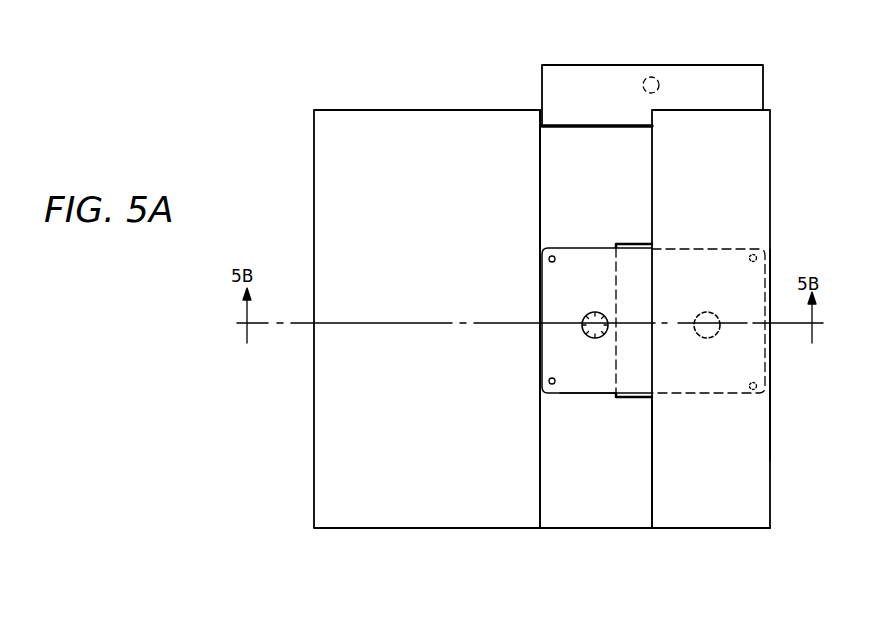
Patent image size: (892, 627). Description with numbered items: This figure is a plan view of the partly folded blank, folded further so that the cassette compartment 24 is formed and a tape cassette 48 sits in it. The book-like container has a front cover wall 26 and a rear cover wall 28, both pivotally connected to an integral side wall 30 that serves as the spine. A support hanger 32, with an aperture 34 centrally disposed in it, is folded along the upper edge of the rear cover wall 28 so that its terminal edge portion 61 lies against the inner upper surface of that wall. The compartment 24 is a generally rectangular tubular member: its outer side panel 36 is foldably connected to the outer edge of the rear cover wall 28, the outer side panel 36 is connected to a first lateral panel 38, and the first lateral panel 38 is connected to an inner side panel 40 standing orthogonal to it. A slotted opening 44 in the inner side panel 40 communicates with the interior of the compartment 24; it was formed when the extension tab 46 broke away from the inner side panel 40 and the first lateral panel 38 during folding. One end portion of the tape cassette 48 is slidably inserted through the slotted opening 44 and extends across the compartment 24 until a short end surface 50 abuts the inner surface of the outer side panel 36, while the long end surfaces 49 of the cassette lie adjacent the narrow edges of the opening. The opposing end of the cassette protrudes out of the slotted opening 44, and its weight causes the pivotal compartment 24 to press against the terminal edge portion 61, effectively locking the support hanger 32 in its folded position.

The cassette compartment 24 is at (770, 138).
The front cover wall 26 is at (446, 518).
The rear cover wall 28 is at (591, 518).
The side wall 30 is at (540, 207).
The support hanger 32 is at (540, 80).
The aperture 34 is at (655, 78).
The outer side panel 36 is at (770, 428).
The first lateral panel 38 is at (757, 470).
The inner side panel 40 is at (652, 458).
The slotted opening 44 is at (647, 290).
The extension tab 46 is at (628, 244).
The tape cassette 48 is at (586, 398).
The long end surfaces 49 is at (570, 246).
The short end surface 50 is at (540, 360).
The terminal edge portion 61 is at (552, 118).